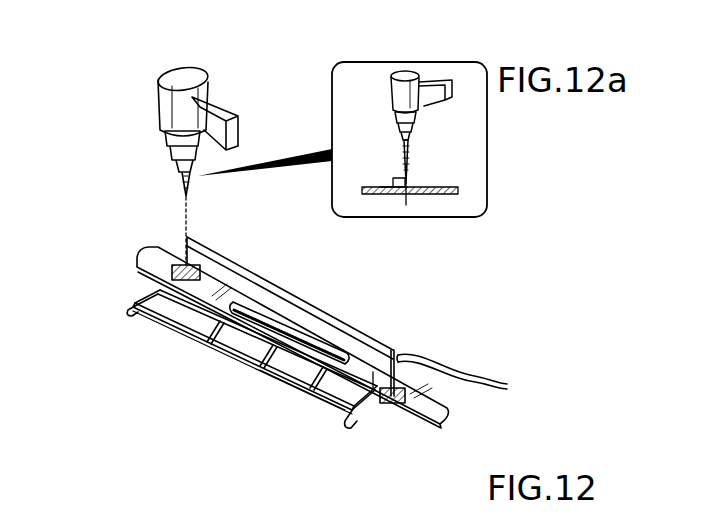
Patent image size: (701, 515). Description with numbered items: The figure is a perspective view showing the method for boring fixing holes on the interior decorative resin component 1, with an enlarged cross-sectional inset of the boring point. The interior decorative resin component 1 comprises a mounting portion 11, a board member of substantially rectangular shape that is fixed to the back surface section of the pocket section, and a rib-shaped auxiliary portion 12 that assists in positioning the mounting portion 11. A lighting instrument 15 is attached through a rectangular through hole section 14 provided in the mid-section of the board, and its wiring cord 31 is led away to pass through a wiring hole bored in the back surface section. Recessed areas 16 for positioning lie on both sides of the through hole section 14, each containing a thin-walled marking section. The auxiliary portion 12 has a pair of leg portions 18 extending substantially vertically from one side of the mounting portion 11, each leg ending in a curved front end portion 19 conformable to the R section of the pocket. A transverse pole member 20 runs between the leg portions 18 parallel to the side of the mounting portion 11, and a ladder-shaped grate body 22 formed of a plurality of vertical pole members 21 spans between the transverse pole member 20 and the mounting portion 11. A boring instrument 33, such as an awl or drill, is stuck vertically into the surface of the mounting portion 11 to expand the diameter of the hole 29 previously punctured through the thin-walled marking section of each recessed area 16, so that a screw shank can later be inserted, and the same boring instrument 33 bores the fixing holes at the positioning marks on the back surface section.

In FIG. 12, the interior decorative resin component 1 is at (415, 322).
In FIG. 12, the mounting portion 11 is at (320, 334).
In FIG. 12a, the mounting portion 11 is at (380, 182).
In FIG. 12, the auxiliary portion 12 is at (203, 374).
In FIG. 12, the through hole section 14 is at (248, 284).
In FIG. 12, the lighting instrument 15 is at (300, 310).
In FIG. 12, the recessed areas 16 is at (143, 253).
In FIG. 12a, the recessed areas 16 is at (440, 188).
In FIG. 12, the leg portions 18 is at (140, 300).
In FIG. 12, the front end portion 19 is at (129, 311).
In FIG. 12, the transverse pole member 20 is at (165, 318).
In FIG. 12, the vertical pole members 21 is at (316, 380).
In FIG. 12, the grate body 22 is at (305, 410).
In FIG. 12a, the hole 29 is at (408, 186).
In FIG. 12, the wiring cord 31 is at (466, 372).
In FIG. 12, the boring instrument 33 is at (162, 97).
In FIG. 12a, the boring instrument 33 is at (396, 85).